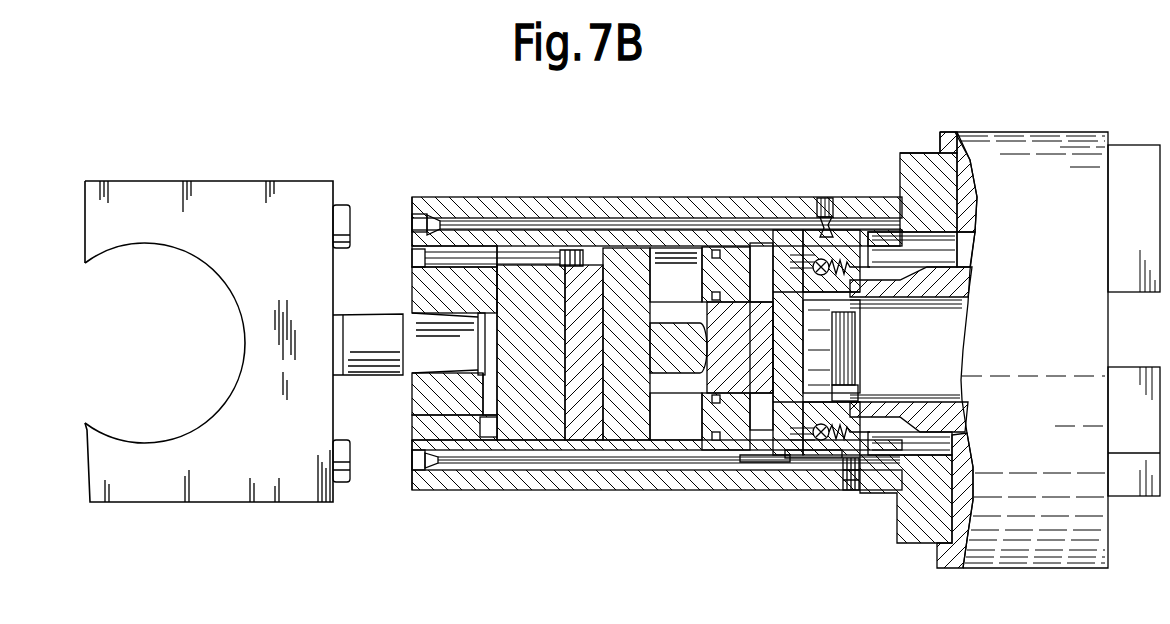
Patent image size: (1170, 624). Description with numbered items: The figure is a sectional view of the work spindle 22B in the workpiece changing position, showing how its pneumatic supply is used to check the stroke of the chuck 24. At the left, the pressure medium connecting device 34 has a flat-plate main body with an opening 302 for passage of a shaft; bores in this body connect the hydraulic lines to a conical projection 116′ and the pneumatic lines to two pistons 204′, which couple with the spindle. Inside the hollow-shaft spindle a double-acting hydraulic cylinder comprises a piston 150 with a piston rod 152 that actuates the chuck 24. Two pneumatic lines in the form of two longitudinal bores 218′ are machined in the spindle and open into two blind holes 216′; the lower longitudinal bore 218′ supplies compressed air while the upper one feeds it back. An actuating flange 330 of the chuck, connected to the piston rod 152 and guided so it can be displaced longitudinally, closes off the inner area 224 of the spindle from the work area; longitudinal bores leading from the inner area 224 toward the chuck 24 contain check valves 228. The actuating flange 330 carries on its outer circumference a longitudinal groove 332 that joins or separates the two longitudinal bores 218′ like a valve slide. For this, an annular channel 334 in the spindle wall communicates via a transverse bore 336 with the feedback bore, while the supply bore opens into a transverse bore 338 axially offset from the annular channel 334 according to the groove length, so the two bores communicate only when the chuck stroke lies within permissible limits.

The pressure medium connecting device 34 is at (199, 506).
The opening 302 is at (158, 247).
The piston 204′ is at (343, 205).
The conical projection 116′ is at (361, 316).
The work spindle 22B is at (588, 208).
The blind hole 216′ is at (413, 220).
The longitudinal bore 218′ is at (510, 220).
The longitudinal groove 332 is at (788, 452).
The piston 150 is at (582, 442).
The piston rod 152 is at (681, 384).
The inner area 224 is at (764, 246).
The actuating flange 330 is at (796, 250).
The annular channel 334 is at (801, 458).
The check valve 228 is at (850, 222).
The transverse bore 336 is at (829, 228).
The transverse bore 338 is at (867, 482).
The chuck 24 is at (1027, 131).